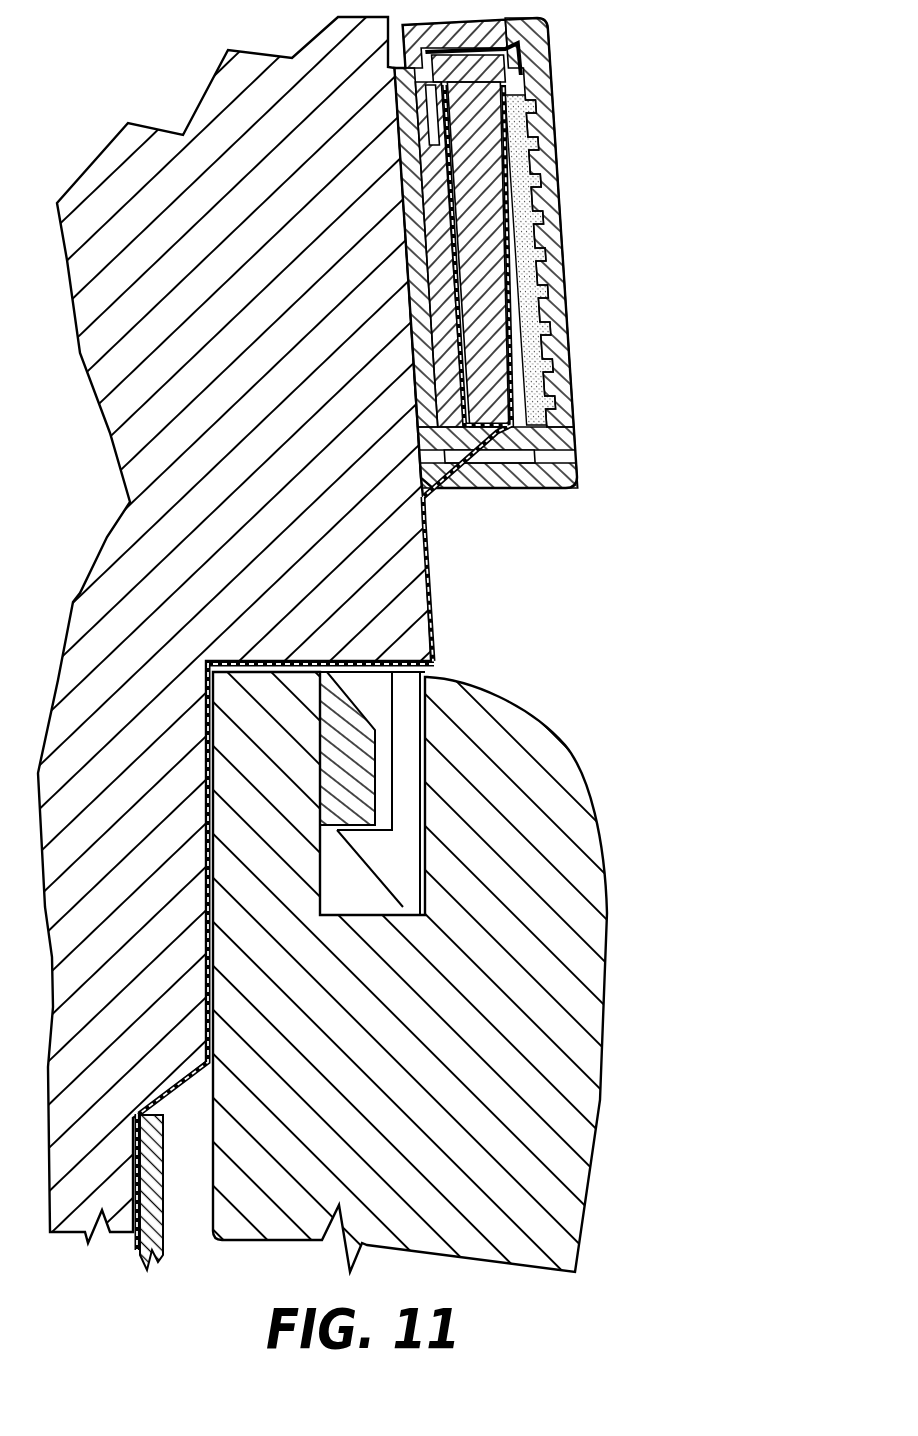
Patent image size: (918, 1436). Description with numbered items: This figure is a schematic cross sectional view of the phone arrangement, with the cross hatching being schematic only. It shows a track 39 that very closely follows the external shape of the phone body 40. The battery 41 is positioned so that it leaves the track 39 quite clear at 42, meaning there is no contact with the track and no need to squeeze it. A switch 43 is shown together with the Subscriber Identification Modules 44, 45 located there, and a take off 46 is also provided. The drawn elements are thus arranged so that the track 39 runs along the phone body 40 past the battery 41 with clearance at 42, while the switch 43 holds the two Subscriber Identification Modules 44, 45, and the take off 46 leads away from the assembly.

The track 39 is at (438, 640).
The phone body 40 is at (434, 590).
The battery 41 is at (567, 900).
The clearance 42 is at (440, 670).
The switch 43 is at (555, 428).
The Subscriber Identification Module 44 is at (492, 340).
The Subscriber Identification Module 45 is at (495, 393).
The take off 46 is at (152, 1214).